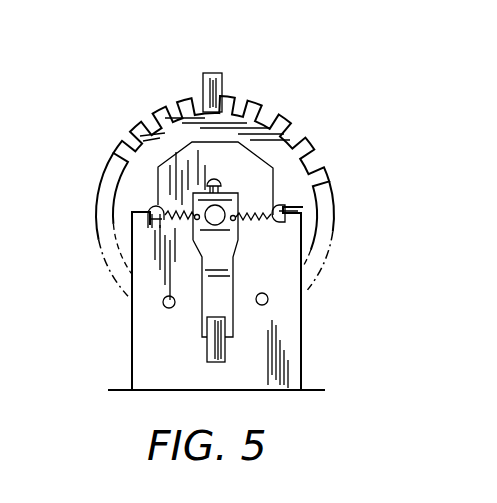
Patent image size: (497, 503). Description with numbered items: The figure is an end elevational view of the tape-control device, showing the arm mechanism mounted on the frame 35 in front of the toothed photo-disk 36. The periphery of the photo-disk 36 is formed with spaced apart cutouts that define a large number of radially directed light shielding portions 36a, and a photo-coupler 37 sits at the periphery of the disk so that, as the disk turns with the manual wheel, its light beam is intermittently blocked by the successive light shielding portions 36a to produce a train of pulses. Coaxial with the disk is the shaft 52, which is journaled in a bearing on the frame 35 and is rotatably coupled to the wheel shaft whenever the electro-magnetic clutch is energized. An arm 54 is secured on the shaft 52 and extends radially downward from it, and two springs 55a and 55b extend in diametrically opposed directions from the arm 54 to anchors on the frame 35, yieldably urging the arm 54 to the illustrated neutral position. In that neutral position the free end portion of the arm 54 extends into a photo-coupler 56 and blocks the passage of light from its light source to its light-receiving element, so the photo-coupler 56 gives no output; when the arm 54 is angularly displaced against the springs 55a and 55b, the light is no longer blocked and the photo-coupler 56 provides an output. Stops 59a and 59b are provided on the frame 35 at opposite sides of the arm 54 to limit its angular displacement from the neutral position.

The frame 35 is at (302, 355).
The photo-disk 36 is at (225, 187).
The light shielding portions 36a is at (326, 101).
The photo-coupler 37 is at (212, 72).
The coaxial shaft 52 is at (221, 208).
The arm 54 is at (234, 270).
The spring 55a is at (253, 206).
The spring 55b is at (177, 210).
The photo-coupler 56 is at (207, 348).
The stop 59a is at (268, 302).
The stop 59b is at (163, 304).